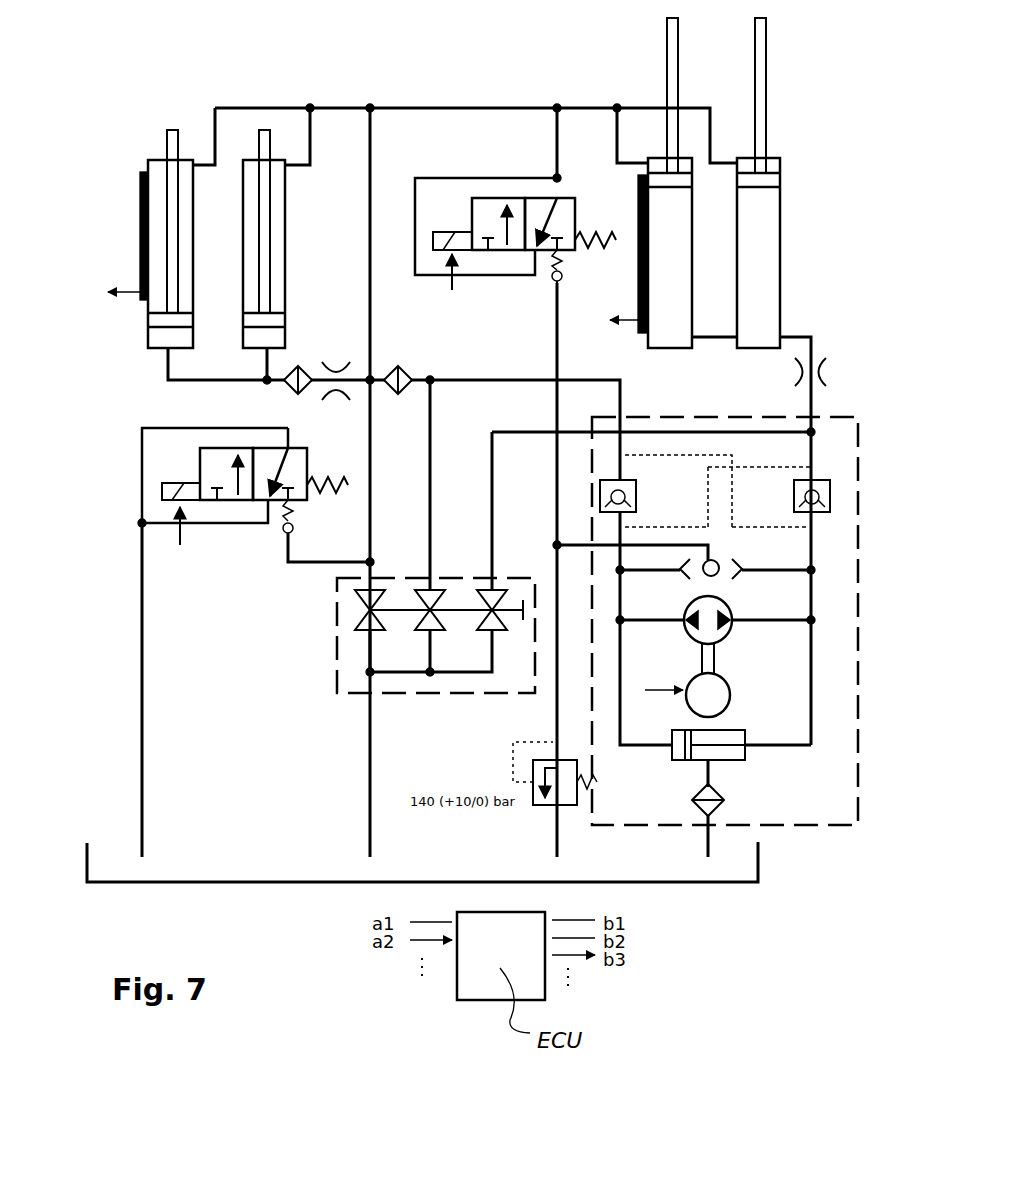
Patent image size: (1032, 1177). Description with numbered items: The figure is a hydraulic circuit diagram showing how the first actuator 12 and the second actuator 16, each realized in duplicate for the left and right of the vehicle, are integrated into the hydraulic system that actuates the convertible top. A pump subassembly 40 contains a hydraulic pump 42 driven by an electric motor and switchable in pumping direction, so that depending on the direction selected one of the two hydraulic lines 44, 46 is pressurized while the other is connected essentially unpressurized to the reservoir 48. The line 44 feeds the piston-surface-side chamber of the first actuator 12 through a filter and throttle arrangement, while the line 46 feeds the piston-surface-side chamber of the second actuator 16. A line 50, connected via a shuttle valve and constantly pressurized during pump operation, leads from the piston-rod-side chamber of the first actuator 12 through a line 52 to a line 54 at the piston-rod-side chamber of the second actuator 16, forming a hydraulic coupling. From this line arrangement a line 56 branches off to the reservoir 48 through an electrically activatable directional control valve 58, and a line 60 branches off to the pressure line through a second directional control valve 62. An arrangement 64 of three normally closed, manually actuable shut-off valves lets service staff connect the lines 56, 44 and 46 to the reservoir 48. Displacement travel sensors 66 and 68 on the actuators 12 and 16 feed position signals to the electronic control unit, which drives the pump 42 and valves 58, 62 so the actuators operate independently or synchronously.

The first actuator 12 is at (128, 163).
The second actuator 16 is at (800, 233).
The pump subassembly 40 is at (858, 730).
The hydraulic pump 42 is at (732, 637).
The hydraulic line 44 is at (625, 402).
The hydraulic line 46 is at (813, 398).
The reservoir 48 is at (760, 862).
The line 50 is at (330, 108).
The line 52 is at (462, 108).
The line 54 is at (595, 108).
The line 56 is at (370, 238).
The directional control valve 58 is at (305, 460).
The line 60 is at (553, 162).
The directional control valve 62 is at (580, 212).
The arrangement of shut-off valves 64 is at (337, 642).
The displacement travel sensor 66 is at (140, 268).
The displacement travel sensor 68 is at (637, 258).